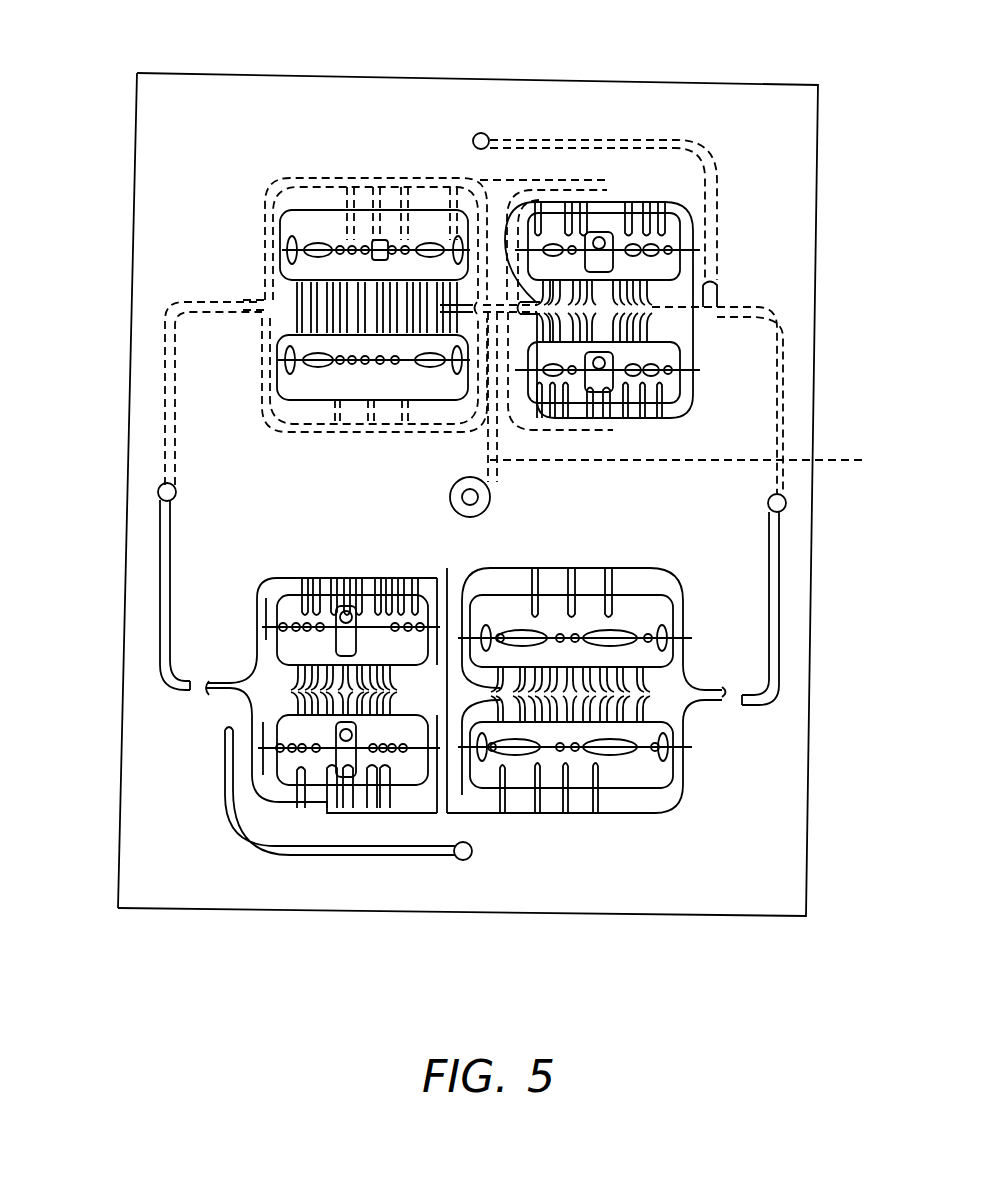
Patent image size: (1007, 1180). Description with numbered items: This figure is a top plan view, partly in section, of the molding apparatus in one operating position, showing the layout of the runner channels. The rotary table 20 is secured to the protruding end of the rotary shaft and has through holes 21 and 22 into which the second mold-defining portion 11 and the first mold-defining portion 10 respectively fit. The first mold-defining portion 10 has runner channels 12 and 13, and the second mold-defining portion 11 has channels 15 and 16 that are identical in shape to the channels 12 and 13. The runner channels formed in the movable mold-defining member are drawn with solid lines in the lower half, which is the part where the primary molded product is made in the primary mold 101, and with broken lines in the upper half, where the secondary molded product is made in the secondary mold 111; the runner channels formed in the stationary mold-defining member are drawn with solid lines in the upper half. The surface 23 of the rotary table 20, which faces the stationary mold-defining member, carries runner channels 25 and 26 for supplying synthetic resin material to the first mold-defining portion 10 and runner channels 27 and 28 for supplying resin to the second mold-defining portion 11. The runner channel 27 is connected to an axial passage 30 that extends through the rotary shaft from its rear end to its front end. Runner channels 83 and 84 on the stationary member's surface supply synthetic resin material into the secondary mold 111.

The first mold-defining portion 10 is at (280, 772).
The second mold-defining portion 11 is at (306, 215).
The runner channel 12 is at (398, 772).
The runner channel 13 is at (602, 765).
The channel 15 is at (342, 228).
The channel 16 is at (549, 190).
The rotary table 20 is at (808, 728).
The through hole 21 is at (287, 782).
The through hole 22 is at (364, 215).
The surface 23 is at (134, 266).
The runner channel 25 is at (160, 573).
The runner channel 26 is at (165, 418).
The runner channel 27 is at (690, 458).
The runner channel 28 is at (357, 858).
The axial passage 30 is at (490, 495).
The runner channel 83 is at (290, 288).
The runner channel 84 is at (690, 380).
The primary mold 101 is at (277, 762).
The secondary mold 111 is at (280, 343).